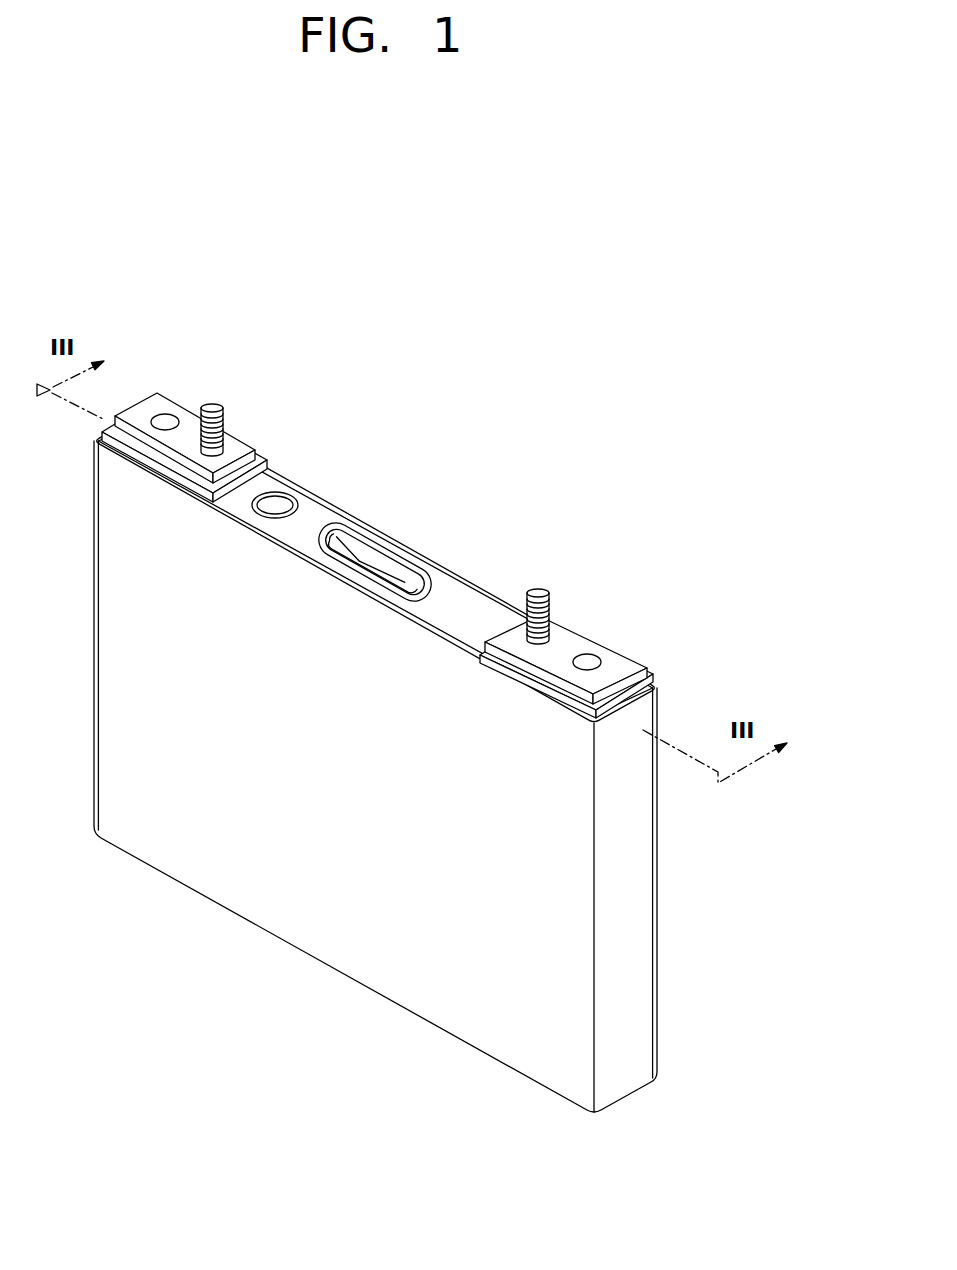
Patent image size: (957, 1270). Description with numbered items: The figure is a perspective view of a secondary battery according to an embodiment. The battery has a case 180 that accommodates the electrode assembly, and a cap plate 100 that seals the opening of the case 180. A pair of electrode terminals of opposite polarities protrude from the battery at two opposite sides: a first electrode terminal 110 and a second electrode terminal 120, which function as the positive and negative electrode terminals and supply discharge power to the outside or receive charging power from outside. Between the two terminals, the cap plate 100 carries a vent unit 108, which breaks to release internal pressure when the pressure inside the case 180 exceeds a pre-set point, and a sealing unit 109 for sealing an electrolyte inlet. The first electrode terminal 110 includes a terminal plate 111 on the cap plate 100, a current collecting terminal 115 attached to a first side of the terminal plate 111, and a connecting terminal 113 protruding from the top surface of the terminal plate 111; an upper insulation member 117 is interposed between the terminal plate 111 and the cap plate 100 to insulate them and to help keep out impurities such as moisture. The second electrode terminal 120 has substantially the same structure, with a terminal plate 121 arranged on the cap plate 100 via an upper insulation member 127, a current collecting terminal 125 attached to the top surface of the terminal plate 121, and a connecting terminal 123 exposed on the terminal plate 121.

The cap plate 100 is at (463, 597).
The vent unit 108 is at (380, 567).
The sealing unit 109 is at (274, 502).
The first electrode terminal 110 is at (615, 614).
The terminal plate 111 is at (620, 663).
The connecting terminal 113 is at (540, 592).
The current collecting terminal 115 is at (585, 655).
The upper insulation member 117 is at (657, 685).
The second electrode terminal 120 is at (176, 400).
The terminal plate 121 is at (146, 404).
The connecting terminal 123 is at (213, 410).
The current collecting terminal 125 is at (166, 420).
The upper insulation member 127 is at (125, 447).
The case 180 is at (635, 930).